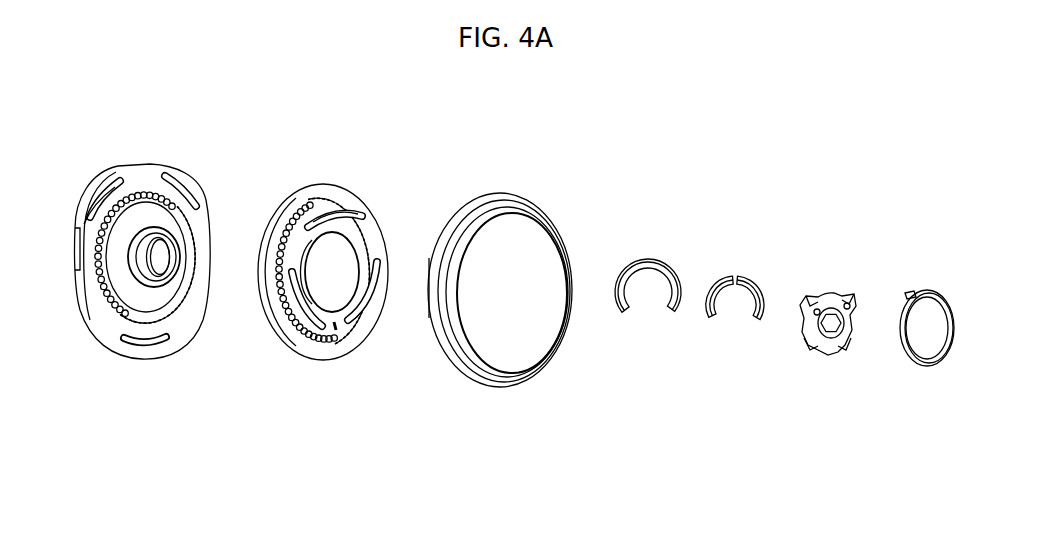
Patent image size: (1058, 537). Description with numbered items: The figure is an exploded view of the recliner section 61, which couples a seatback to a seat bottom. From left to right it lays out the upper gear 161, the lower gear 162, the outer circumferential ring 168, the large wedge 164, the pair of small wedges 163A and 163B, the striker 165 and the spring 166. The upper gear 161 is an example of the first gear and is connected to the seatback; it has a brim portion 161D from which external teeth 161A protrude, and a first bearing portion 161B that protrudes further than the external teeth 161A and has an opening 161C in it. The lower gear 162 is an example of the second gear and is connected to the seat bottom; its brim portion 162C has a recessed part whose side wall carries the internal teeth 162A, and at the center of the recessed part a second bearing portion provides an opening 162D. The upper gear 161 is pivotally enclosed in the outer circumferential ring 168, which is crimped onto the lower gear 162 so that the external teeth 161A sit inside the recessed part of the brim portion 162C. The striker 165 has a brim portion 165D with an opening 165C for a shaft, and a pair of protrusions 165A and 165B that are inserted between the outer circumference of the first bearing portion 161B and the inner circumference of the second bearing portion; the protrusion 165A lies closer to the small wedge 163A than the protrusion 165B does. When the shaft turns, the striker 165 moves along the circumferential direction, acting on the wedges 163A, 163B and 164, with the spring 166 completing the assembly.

The recliner section 61 is at (947, 440).
The upper gear 161 is at (155, 280).
The external teeth 161A is at (126, 326).
The first bearing portion 161B is at (152, 229).
The opening 161C is at (164, 250).
The brim portion 161D is at (107, 323).
The lower gear 162 is at (320, 296).
The internal teeth 162A is at (334, 198).
The brim portion 162C is at (275, 311).
The opening 162D is at (347, 260).
The outer circumferential ring 168 is at (493, 388).
The large wedge 164 is at (622, 320).
The small wedge 163A is at (710, 322).
The small wedge 163B is at (759, 322).
The striker 165 is at (831, 350).
The protrusion 165A is at (812, 347).
The protrusion 165B is at (843, 347).
The opening 165C is at (843, 302).
The brim portion 165D is at (822, 303).
The spring 166 is at (926, 368).